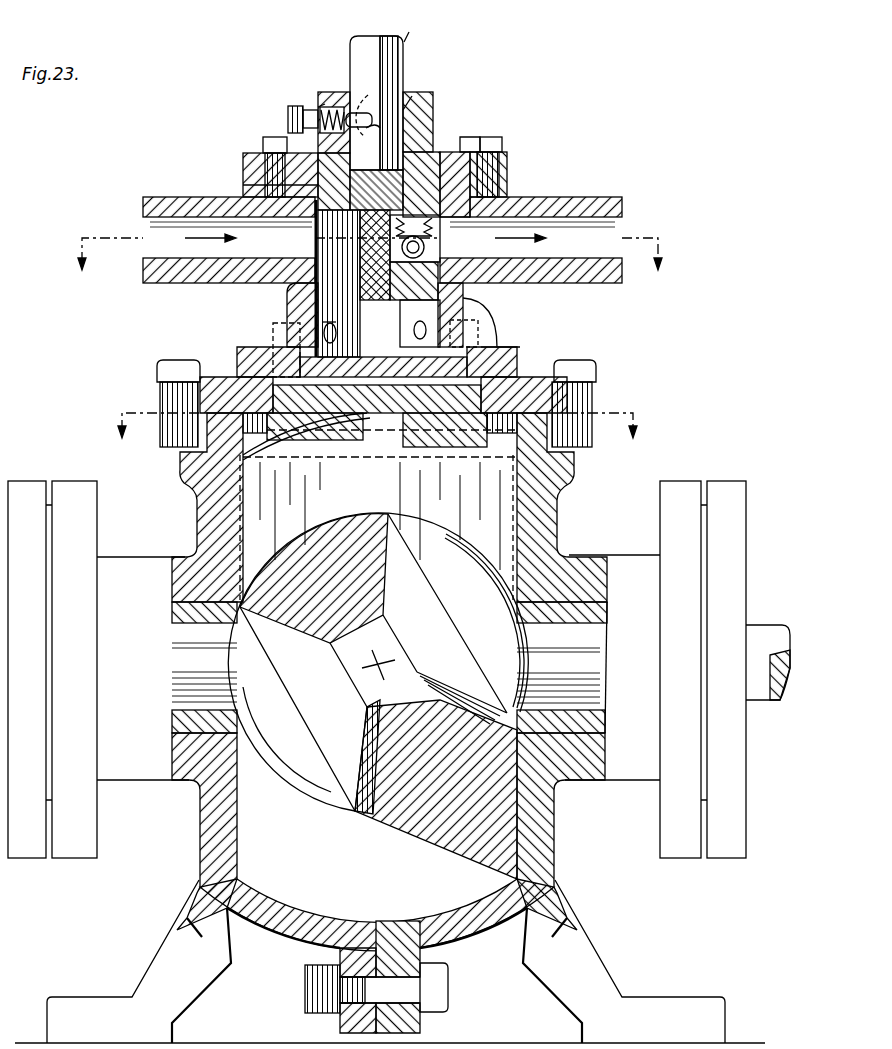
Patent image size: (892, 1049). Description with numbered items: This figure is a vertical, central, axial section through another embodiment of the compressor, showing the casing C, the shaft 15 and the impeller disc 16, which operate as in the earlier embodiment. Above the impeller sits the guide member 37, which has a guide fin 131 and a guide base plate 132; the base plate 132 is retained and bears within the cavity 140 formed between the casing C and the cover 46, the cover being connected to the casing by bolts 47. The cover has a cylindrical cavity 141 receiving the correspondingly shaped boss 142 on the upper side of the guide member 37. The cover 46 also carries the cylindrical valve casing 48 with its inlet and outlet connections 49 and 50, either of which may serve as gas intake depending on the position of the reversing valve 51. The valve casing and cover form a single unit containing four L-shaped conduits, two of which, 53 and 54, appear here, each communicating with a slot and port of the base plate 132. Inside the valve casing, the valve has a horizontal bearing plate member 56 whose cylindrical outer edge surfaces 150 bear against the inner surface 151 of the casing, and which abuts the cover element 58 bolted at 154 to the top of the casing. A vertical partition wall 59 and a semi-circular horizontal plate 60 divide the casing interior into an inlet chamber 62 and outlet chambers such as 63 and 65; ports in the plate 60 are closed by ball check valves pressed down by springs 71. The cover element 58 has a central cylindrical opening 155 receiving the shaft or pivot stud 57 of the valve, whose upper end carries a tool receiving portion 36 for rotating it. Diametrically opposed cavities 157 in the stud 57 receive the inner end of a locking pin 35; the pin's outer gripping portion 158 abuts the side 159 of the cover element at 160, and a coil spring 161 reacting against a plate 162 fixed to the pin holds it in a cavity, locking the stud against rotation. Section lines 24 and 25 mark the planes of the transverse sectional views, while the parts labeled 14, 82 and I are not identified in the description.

The tool receiving portion 36 is at (362, 58).
The lateral diametrically opposed cavities 157 is at (414, 24).
The plate 162 is at (360, 104).
The coil spring member 161 is at (370, 143).
The locking pin 35 is at (338, 122).
The side of the cover 159 is at (322, 118).
The gripping portion 158 is at (290, 112).
The abutment point 160 is at (320, 106).
The outer edge surfaces 150 is at (252, 168).
The bolts 154 is at (276, 146).
The cover element 58 is at (420, 106).
The central cylindrical opening 155 is at (405, 112).
The reversing valve 51 is at (432, 158).
The pivot stud or shaft 57 is at (438, 110).
The horizontal abutment or bearing plate member 56 is at (468, 148).
The inner surface of the valve casing 151 is at (482, 200).
The inlet connection 49 is at (187, 200).
The outlet connection 50 is at (604, 200).
The section line 24— 24 is at (378, 270).
The inlet chamber 62 is at (345, 248).
The outlet chamber 63 is at (432, 232).
The springs 71 is at (462, 272).
The L-shaped bore or conduit 54 is at (428, 332).
The outlet chamber 65 is at (470, 312).
The boss 142 is at (462, 350).
The cylindrical cavity 141 is at (522, 368).
The cylindrical valve casing 48 is at (296, 290).
The L-shaped bore or conduit 53 is at (298, 333).
The vertical partition wall member 59 is at (338, 311).
The semi-circular horizontal plate member 60 is at (400, 262).
The cover 46 is at (530, 370).
The guide base plate 132 is at (585, 410).
The bolts 47 is at (160, 368).
The section line 25— 25 is at (373, 437).
The cavity 140 is at (180, 460).
The valve body 14 is at (580, 560).
The guide member 37 is at (210, 535).
The shaft 15 is at (590, 640).
The casing C is at (208, 846).
The base support I is at (298, 940).
The guide fin 131 is at (495, 502).
The ball valve member 82 is at (360, 690).
The impeller disc 16 is at (408, 835).